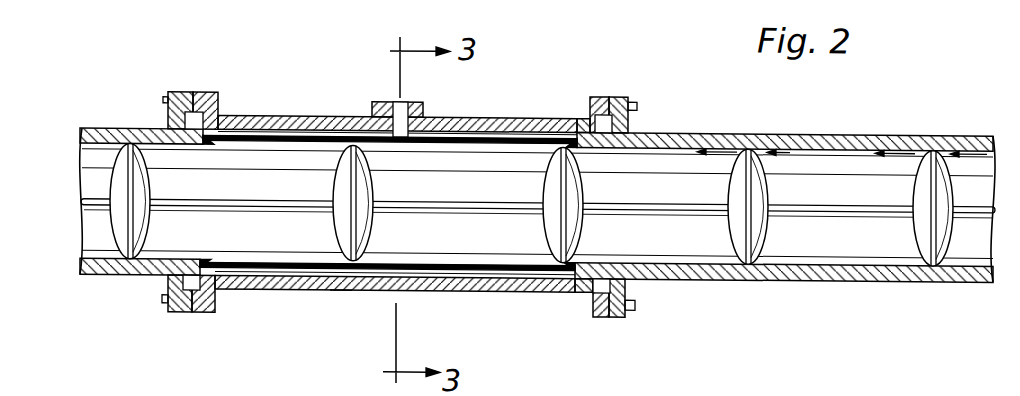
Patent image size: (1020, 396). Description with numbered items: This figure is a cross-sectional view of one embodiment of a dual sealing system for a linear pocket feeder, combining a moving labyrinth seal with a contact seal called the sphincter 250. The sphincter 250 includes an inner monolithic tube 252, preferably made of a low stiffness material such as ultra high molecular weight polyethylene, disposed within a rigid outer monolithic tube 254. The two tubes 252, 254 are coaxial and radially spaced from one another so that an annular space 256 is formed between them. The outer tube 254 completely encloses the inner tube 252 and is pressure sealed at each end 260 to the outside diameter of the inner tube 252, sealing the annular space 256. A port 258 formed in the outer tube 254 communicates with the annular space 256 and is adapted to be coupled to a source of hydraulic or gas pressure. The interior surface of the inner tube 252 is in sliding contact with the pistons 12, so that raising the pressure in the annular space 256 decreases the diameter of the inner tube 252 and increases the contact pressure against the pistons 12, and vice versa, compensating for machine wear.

The pistons 12 is at (340, 182).
The sphincter 250 is at (399, 188).
The inner monolithic tube 252 is at (495, 258).
The outer monolithic tube 254 is at (510, 113).
The annular space 256 is at (341, 275).
The port 258 is at (399, 100).
The end 260 is at (204, 129).